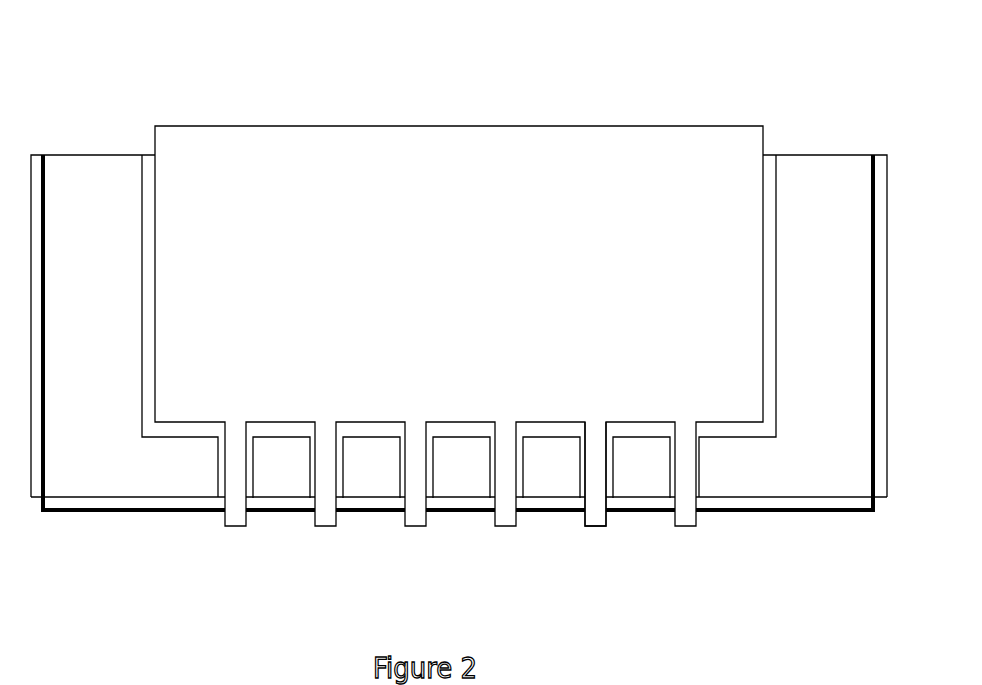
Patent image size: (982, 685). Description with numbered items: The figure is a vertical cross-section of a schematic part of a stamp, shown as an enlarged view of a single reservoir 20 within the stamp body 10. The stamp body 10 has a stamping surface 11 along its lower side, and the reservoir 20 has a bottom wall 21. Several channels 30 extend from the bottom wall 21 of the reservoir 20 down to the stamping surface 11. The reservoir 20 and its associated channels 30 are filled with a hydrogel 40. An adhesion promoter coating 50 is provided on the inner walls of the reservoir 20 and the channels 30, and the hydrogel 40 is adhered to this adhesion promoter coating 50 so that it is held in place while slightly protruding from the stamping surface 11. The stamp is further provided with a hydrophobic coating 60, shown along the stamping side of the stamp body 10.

The stamp body 10 is at (817, 178).
The stamping surface 11 is at (748, 500).
The reservoir 20 is at (220, 155).
The bottom wall 21 is at (285, 440).
The channels 30 is at (595, 515).
The hydrogel 40 is at (400, 155).
The adhesion promoter coating 50 is at (768, 167).
The hydrophobic coating 60 is at (825, 505).